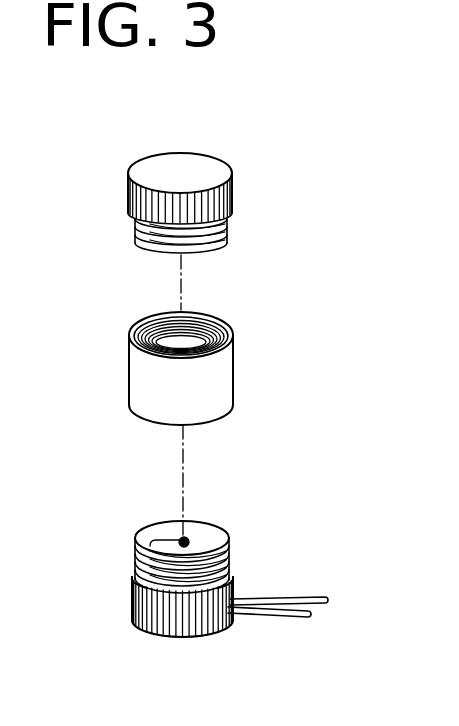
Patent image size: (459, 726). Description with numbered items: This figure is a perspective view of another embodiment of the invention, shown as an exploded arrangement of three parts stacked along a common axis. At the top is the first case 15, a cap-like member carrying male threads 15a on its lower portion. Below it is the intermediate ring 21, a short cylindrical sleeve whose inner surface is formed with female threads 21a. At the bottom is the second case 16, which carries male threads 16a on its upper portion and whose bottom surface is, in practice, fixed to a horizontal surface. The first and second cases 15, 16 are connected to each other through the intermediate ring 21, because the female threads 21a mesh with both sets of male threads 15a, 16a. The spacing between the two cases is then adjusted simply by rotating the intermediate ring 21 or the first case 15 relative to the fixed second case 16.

The first case 15 is at (201, 191).
The male threads of first case 15a is at (200, 243).
The intermediate ring 21 is at (214, 357).
The female threads of intermediate ring 21a is at (200, 336).
The second case 16 is at (197, 611).
The male threads of second case 16a is at (150, 567).